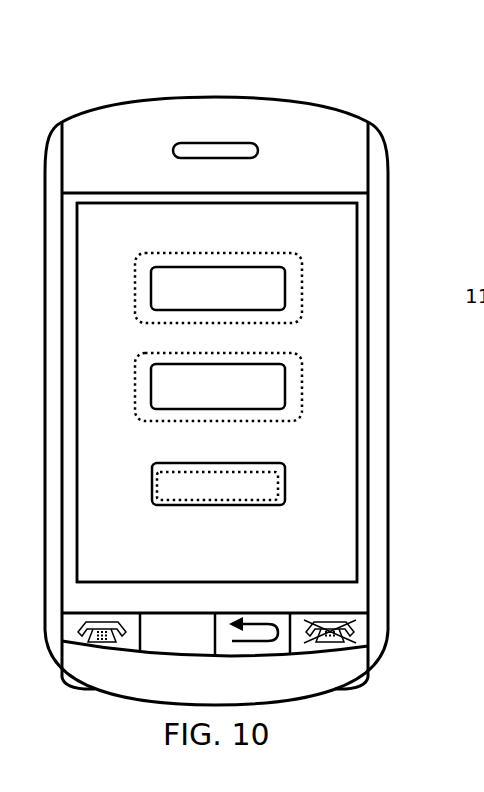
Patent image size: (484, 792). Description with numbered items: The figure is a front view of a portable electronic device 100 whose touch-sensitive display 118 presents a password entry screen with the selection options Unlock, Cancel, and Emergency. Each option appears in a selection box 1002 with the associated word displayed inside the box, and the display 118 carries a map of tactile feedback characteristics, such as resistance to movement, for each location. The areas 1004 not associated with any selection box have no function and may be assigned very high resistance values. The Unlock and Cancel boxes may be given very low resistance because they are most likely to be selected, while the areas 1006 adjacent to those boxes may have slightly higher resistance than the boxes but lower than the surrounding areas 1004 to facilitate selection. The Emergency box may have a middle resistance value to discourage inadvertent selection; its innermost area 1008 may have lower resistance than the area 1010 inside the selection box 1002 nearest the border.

The portable electronic device 100 is at (376, 123).
The touch-sensitive display 118 is at (353, 218).
The selection boxes 1002 is at (285, 292).
The areas not associated with the selection boxes 1004 is at (343, 555).
The areas adjacent to the selection boxes 1006 is at (142, 278).
The innermost area of the Emergency selection box 1008 is at (180, 495).
The area inside the selection box nearest the border 1010 is at (253, 502).